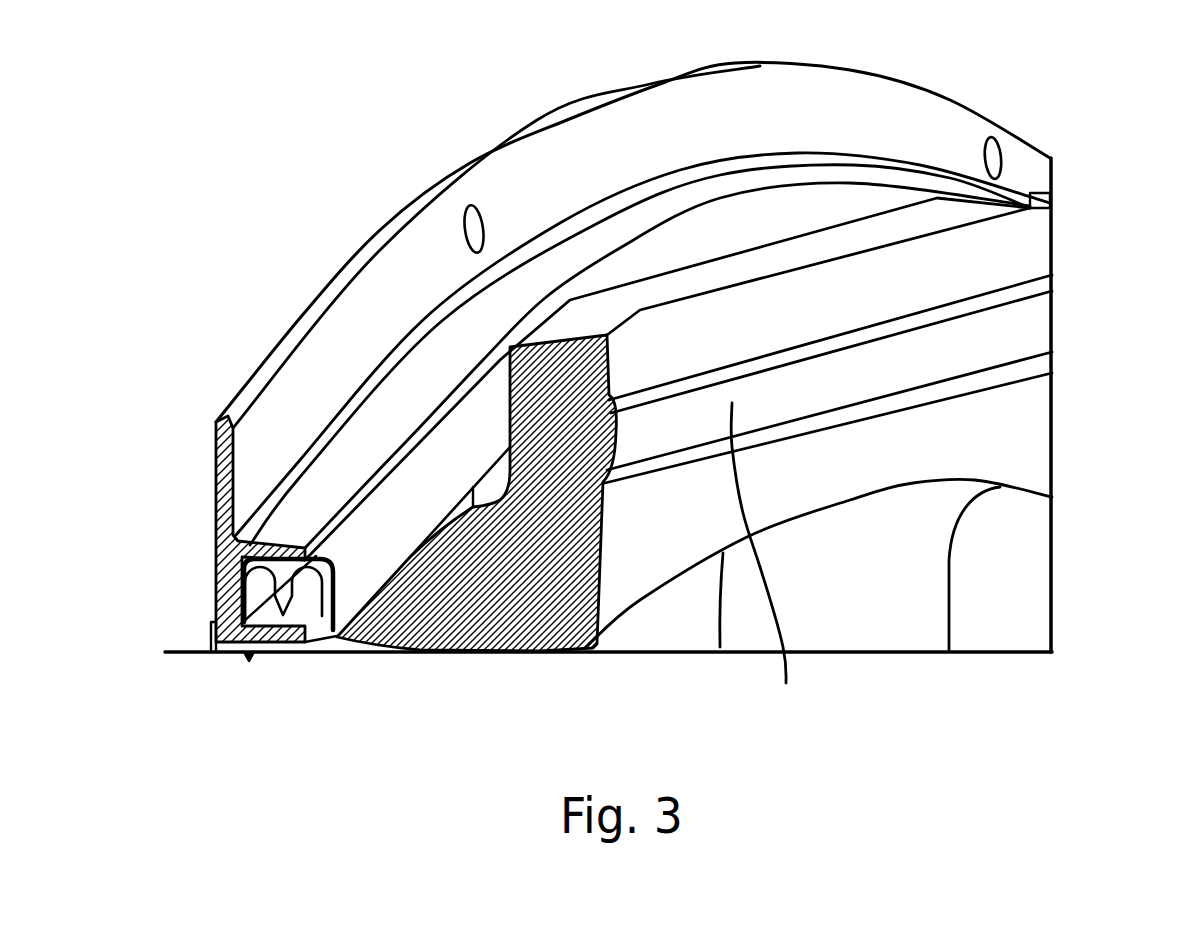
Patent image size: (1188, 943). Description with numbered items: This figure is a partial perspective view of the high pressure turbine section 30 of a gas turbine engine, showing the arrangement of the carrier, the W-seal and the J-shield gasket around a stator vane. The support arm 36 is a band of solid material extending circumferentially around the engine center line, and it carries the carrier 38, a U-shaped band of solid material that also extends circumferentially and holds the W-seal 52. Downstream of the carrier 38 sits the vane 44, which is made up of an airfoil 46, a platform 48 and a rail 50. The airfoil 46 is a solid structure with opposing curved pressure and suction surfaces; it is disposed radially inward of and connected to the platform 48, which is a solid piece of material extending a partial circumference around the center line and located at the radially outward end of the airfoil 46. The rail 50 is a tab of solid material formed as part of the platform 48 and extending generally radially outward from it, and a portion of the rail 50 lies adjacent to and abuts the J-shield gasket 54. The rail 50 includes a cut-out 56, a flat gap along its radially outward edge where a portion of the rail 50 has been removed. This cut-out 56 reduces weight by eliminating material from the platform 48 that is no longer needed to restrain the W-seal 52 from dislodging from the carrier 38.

The high pressure turbine section 30 is at (352, 122).
The support arm 36 is at (340, 267).
The carrier 38 is at (283, 540).
The vane 44 is at (626, 628).
The airfoil 46 is at (830, 630).
The platform 48 is at (472, 630).
The rail 50 is at (764, 560).
The W-seal 52 is at (285, 580).
The J-shield gasket 54 is at (385, 517).
The cut-out 56 is at (825, 245).